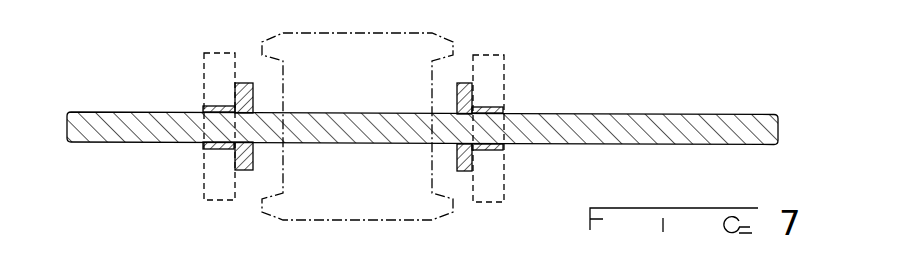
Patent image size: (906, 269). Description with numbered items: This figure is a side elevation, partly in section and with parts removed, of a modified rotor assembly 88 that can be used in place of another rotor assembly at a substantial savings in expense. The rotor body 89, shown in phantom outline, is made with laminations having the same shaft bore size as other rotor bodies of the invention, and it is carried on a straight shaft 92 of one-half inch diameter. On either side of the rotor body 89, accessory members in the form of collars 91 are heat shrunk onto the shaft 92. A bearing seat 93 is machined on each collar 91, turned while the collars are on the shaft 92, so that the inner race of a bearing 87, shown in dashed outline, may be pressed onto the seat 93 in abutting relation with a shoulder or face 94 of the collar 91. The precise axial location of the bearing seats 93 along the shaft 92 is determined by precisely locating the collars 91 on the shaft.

The bearing 87 is at (207, 53).
The rotor assembly 88 is at (464, 38).
The rotor body 89 is at (364, 33).
The collar 91 is at (244, 172).
The straight shaft 92 is at (583, 113).
The bearing seat 93 is at (217, 107).
The shoulder or face 94 is at (232, 150).